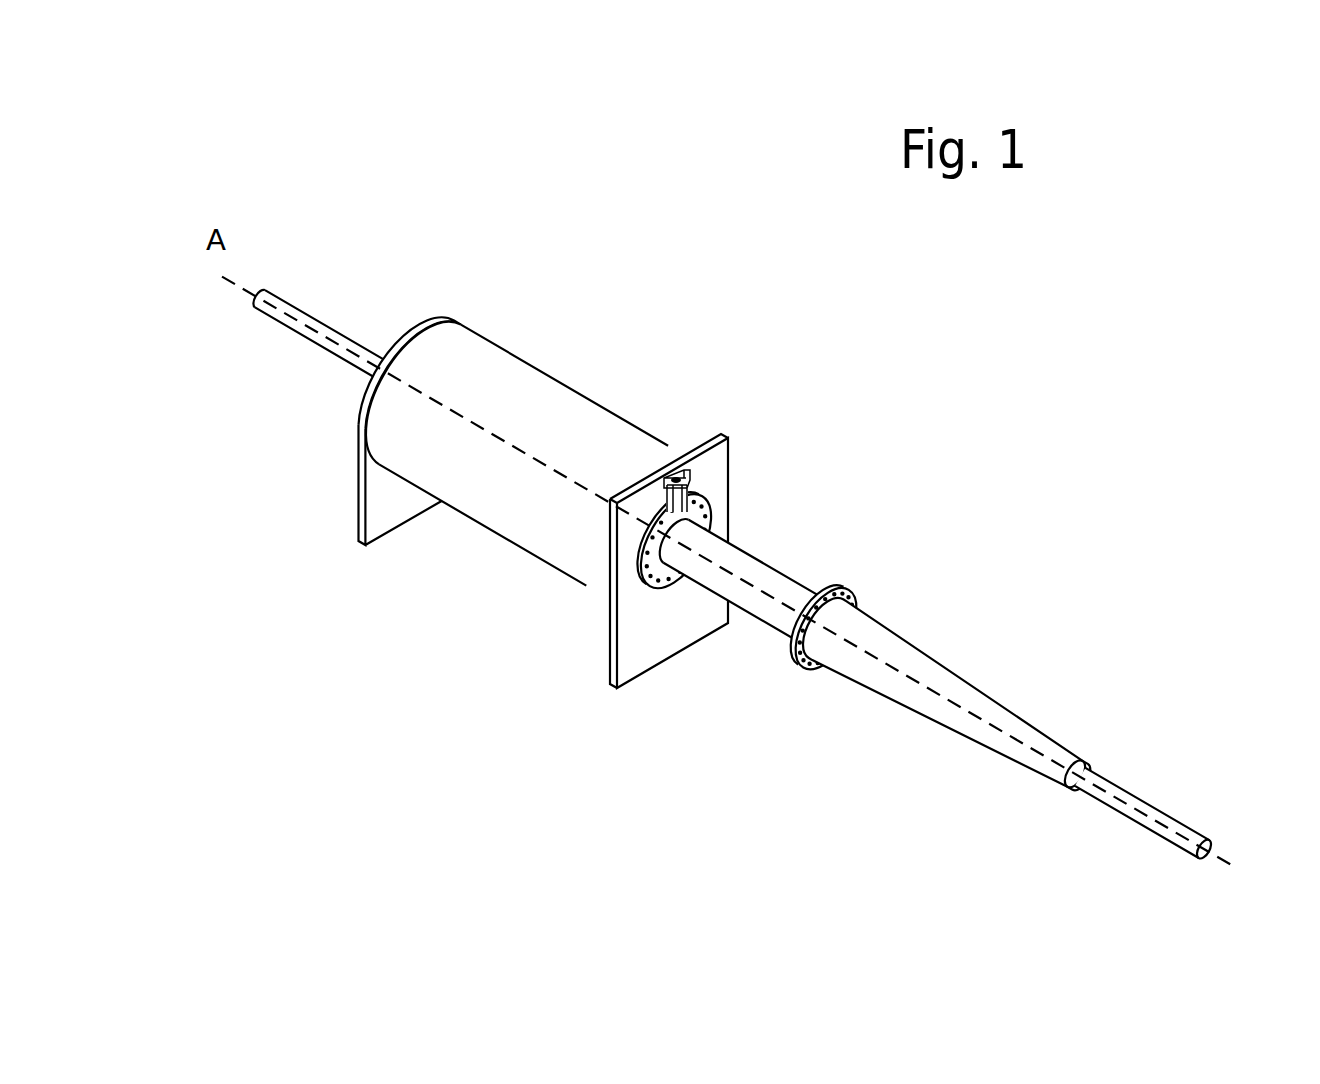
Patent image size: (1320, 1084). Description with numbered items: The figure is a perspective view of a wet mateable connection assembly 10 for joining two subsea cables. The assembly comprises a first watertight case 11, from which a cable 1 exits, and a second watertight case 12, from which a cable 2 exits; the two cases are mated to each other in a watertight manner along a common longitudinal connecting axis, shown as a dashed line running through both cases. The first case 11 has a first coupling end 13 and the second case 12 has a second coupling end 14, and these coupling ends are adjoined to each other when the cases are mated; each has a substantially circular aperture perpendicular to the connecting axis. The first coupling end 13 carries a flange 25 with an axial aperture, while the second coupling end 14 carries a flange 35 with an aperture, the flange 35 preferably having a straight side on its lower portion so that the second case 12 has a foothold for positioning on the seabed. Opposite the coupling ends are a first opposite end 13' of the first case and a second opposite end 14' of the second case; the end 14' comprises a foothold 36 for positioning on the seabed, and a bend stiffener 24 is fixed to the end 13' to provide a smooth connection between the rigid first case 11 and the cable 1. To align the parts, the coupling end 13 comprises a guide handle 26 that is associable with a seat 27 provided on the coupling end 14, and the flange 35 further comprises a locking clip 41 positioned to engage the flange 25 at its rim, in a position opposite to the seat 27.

The cable 1 is at (1130, 817).
The cable 2 is at (323, 327).
The wet mateable connection assembly 10 is at (712, 338).
The first watertight case 11 is at (773, 617).
The second watertight case 12 is at (483, 380).
The first coupling end 13 is at (739, 541).
The first opposite end 13' is at (884, 622).
The second coupling end 14 is at (707, 529).
The second opposite end 14' is at (332, 431).
The bend stiffener 24 is at (957, 690).
The flange 25 is at (645, 582).
The guide handle 26 is at (722, 465).
The seat 27 is at (682, 486).
The flange 35 is at (633, 647).
The foothold 36 is at (387, 507).
The locking clip 41 is at (675, 592).